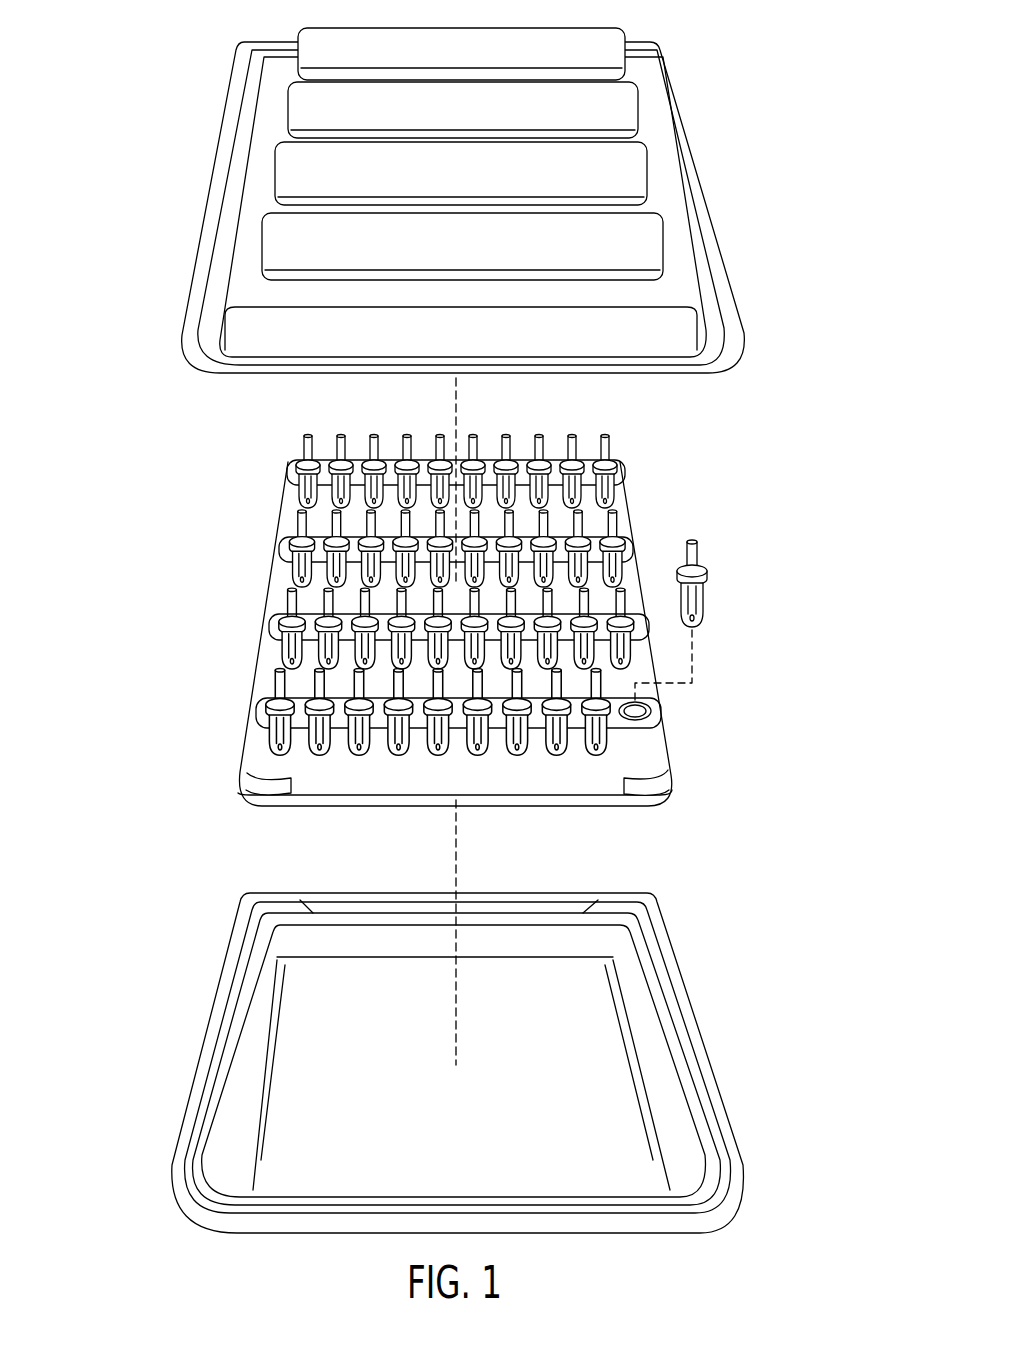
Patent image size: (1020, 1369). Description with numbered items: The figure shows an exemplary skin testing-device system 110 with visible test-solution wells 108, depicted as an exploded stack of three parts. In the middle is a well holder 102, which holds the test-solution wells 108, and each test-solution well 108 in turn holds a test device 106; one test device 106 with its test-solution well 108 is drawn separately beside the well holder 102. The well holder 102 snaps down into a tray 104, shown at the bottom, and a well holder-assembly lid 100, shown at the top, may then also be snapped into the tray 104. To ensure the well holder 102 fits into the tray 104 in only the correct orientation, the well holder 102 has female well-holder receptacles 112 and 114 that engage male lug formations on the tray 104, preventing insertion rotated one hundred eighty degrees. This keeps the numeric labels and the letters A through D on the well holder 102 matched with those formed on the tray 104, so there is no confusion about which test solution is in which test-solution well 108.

The well holder-assembly lid 100 is at (178, 265).
The skin testing-device system 110 is at (158, 120).
The well holder 102 is at (457, 635).
The tray 104 is at (178, 988).
The test device 106 is at (704, 549).
The test-solution well 108 is at (712, 600).
The female well-holder receptacle 112 is at (257, 790).
The female well-holder receptacle 114 is at (655, 790).